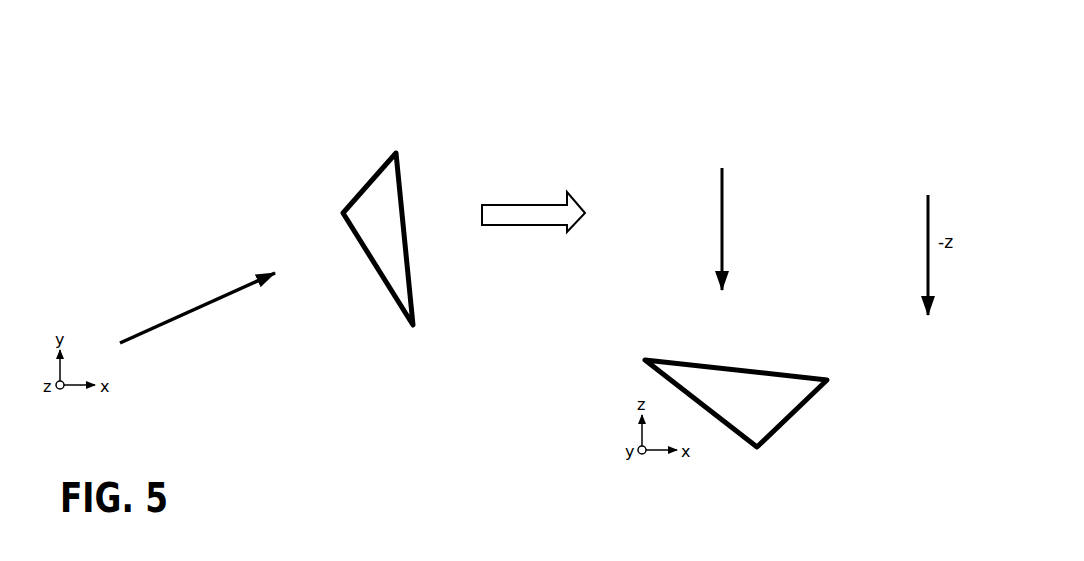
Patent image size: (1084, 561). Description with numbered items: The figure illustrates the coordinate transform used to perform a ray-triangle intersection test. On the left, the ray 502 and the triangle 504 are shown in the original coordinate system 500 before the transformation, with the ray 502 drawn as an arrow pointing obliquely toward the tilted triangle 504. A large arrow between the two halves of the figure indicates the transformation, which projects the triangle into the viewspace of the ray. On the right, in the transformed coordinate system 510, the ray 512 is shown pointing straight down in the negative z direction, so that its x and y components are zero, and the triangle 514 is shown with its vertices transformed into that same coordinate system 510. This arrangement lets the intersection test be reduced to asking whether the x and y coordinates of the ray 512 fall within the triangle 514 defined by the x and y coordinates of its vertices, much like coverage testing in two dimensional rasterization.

The coordinate system 500 is at (217, 148).
The ray 502 is at (170, 318).
The triangle 504 is at (362, 188).
The transformed coordinate system 510 is at (597, 125).
The ray 512 is at (720, 230).
The triangle 514 is at (708, 365).